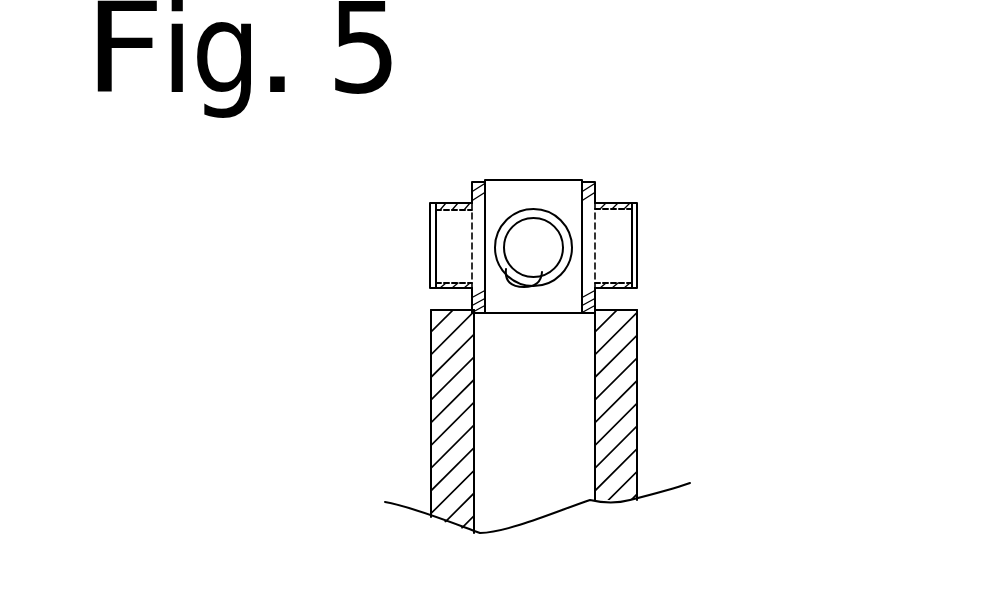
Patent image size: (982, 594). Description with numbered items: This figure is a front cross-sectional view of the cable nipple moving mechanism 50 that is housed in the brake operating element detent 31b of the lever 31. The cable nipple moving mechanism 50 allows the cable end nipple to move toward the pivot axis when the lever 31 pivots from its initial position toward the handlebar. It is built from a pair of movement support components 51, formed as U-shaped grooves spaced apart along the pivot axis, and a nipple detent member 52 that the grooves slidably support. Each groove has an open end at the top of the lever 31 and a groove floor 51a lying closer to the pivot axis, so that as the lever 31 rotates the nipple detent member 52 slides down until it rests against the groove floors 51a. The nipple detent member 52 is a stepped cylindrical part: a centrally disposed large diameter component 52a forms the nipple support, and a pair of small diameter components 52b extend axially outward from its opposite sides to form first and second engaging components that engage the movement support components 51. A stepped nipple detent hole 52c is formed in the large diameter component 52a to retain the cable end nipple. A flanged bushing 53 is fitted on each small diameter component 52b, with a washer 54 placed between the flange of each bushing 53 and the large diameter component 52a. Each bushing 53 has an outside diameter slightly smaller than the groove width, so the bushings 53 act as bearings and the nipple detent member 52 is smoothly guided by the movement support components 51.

The lever 31 is at (632, 397).
The brake operating element detent 31b is at (661, 248).
The cable nipple moving mechanism 50 is at (663, 209).
The movement support component 51 is at (612, 288).
The groove floor 51a is at (608, 296).
The nipple detent member 52 is at (545, 180).
The large diameter component 52a is at (501, 193).
The small diameter component 52b is at (443, 235).
The stepped nipple detent hole 52c is at (541, 284).
The flanged bushing 53 is at (594, 182).
The washer 54 is at (481, 181).